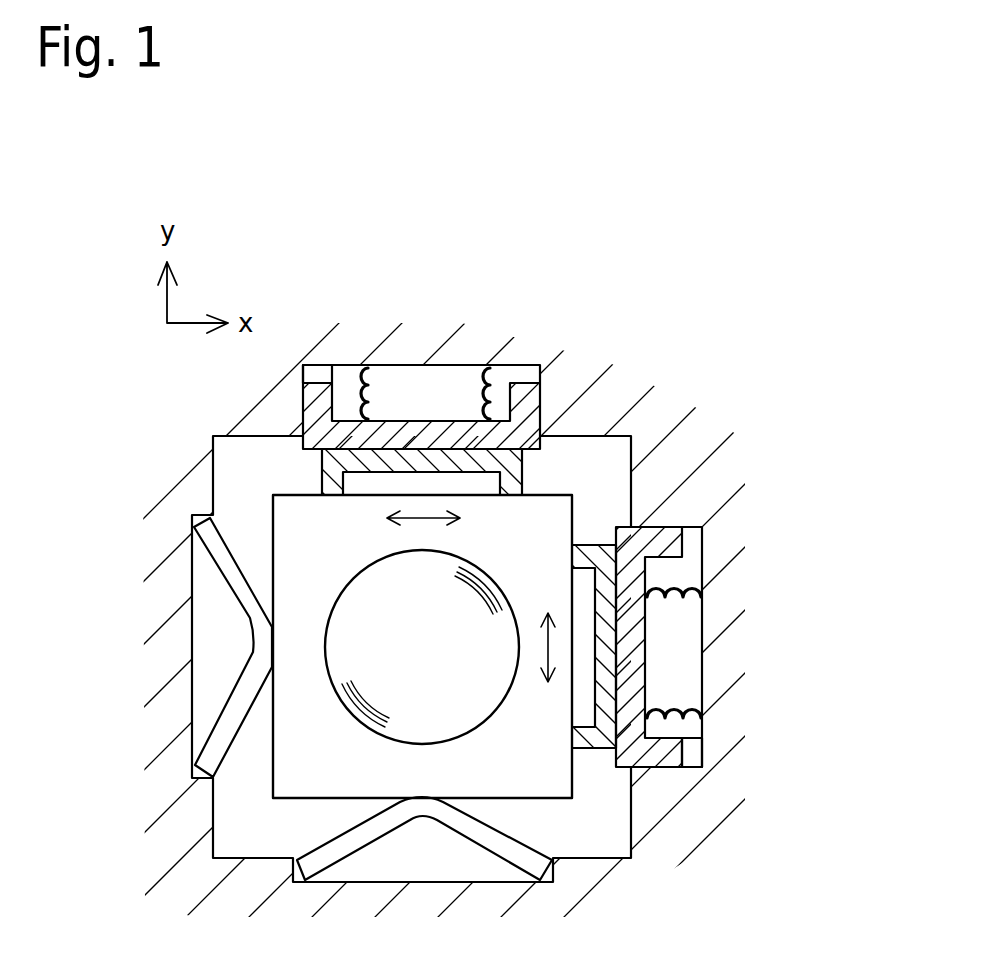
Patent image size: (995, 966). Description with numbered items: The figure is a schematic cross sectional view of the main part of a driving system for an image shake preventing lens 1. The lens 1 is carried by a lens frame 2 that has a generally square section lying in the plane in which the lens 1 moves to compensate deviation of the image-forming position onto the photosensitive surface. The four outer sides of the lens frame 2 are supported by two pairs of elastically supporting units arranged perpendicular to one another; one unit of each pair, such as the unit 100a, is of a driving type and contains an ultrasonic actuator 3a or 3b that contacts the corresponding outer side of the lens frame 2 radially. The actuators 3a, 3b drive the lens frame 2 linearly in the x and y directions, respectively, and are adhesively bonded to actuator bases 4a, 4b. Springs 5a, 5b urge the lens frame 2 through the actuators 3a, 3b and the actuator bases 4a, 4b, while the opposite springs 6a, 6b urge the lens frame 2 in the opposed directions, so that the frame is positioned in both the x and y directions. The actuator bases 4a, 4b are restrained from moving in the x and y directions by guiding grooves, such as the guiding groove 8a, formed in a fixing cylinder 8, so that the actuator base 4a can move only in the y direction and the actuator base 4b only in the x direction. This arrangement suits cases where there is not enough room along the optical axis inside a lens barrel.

The image shake preventing lens 1 is at (462, 703).
The lens frame 2 is at (557, 758).
The ultrasonic actuator 3a is at (520, 468).
The ultrasonic actuator 3b is at (602, 547).
The actuator base 4a is at (520, 397).
The actuator base 4b is at (650, 567).
The spring 5a is at (477, 397).
The spring 5b is at (650, 718).
The spring 6a is at (352, 842).
The spring 6b is at (232, 578).
The fixing cylinder 8 is at (180, 477).
The guiding groove 8a is at (318, 373).
The elastically supporting unit 100a is at (497, 483).